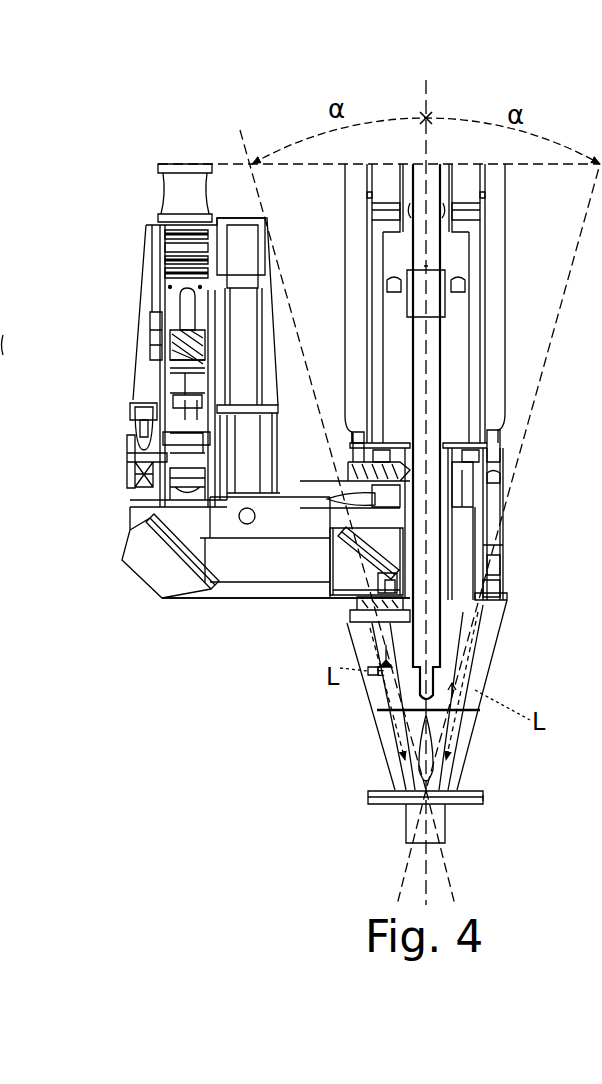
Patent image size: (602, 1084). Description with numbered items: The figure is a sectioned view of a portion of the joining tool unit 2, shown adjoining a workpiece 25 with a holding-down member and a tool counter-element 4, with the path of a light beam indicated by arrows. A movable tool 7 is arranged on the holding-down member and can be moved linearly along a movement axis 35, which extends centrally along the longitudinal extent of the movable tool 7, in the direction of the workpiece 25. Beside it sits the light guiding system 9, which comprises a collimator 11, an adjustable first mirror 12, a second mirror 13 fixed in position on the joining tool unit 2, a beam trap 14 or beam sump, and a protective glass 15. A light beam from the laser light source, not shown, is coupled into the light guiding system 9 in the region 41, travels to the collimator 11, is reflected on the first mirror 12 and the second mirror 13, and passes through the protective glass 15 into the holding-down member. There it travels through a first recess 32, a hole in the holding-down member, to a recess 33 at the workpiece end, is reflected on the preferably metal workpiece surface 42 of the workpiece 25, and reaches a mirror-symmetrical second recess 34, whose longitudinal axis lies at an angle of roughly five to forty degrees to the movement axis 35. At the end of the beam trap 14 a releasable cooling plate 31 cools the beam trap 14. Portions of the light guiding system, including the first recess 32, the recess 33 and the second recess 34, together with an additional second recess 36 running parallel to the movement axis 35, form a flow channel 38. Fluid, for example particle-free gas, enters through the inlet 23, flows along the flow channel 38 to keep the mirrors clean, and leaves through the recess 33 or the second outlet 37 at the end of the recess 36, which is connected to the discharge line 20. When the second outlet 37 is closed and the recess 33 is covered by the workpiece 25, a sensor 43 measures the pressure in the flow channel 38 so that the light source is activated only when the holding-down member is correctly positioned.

The joining tool unit 2 is at (272, 718).
The workpiece 4 is at (447, 830).
The movable tool 7 is at (443, 352).
The light guiding system 9 is at (240, 583).
The collimator 11 is at (153, 477).
The first mirror 12 is at (178, 568).
The second mirror 13 is at (350, 578).
The beam trap 14 is at (505, 595).
The protective glass 15 is at (350, 620).
The discharge line 20 is at (250, 340).
The inlet 23 is at (292, 530).
The workpiece 25 is at (490, 798).
The cooling plate 31 is at (497, 580).
The first recess 32 is at (395, 722).
The recess 33 is at (422, 778).
The second recess 34 is at (468, 668).
The movement axis 35 is at (432, 110).
The second recess 36 is at (465, 520).
The second outlet 37 is at (490, 456).
The flow channel 38 is at (468, 613).
The region 41 is at (172, 183).
The workpiece surface 42 is at (468, 790).
The sensor 43 is at (360, 690).